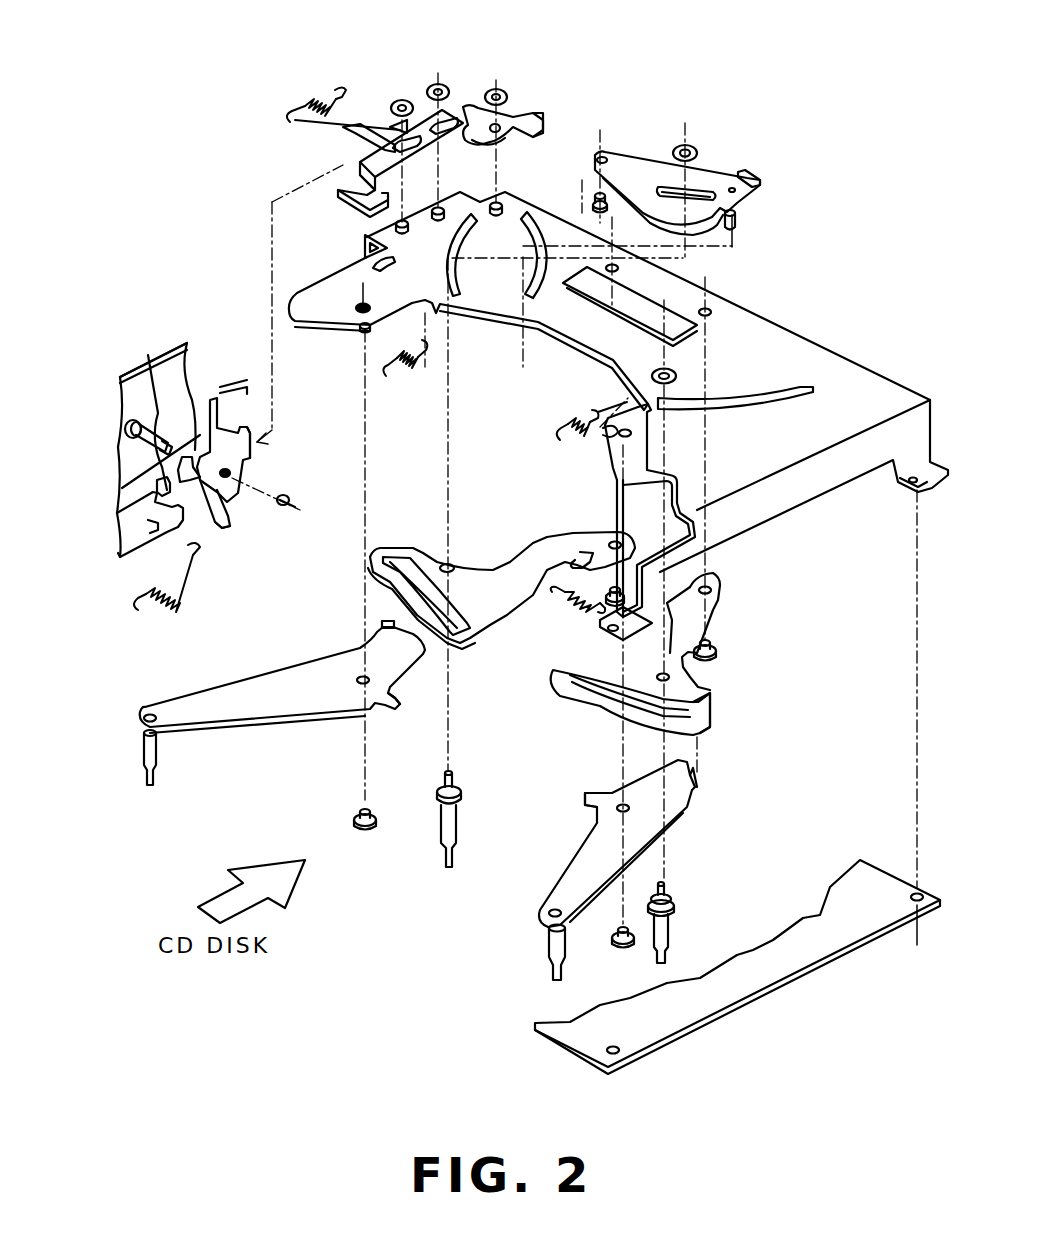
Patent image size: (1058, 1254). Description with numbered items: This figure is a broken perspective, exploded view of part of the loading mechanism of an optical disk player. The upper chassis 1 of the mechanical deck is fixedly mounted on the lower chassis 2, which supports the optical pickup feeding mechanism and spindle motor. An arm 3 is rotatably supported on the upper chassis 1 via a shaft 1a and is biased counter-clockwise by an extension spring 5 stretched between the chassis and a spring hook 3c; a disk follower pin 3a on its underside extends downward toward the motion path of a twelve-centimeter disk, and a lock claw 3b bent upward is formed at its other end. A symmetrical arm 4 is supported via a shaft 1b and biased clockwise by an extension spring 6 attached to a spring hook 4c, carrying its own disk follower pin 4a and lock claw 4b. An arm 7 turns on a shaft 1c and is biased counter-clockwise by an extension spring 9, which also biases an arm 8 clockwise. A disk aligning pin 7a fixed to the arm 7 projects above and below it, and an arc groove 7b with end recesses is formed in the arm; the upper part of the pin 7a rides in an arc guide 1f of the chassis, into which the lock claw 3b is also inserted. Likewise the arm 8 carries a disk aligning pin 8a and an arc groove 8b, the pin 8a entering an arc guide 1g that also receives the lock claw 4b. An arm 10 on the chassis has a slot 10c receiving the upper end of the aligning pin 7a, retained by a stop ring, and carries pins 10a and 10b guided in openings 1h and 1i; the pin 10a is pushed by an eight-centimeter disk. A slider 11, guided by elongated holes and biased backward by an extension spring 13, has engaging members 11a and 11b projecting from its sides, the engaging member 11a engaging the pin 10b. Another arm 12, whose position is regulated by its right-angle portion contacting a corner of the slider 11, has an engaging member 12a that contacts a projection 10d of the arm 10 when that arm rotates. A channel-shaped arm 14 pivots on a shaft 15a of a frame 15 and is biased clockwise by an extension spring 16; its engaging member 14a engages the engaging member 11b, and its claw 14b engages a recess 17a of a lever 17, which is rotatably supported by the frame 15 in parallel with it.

The upper chassis 1 is at (812, 345).
The shaft 1a is at (365, 833).
The shaft 1b is at (620, 952).
The shaft 1c is at (647, 522).
The arc guide 1f is at (462, 240).
The arc guide 1g is at (725, 410).
The guide opening 1h is at (528, 296).
The guide opening 1i is at (363, 258).
The lower chassis 2 is at (870, 872).
The arm 3 is at (275, 688).
The disk follower pin 3a is at (158, 750).
The lock claw 3b is at (380, 622).
The spring hook 3c is at (397, 712).
The arm 4 is at (570, 883).
The disk follower pin 4a is at (547, 945).
The lock claw 4b is at (700, 777).
The spring hook 4c is at (590, 798).
The extension spring 5 is at (405, 372).
The extension spring 6 is at (565, 422).
The arm 7 is at (533, 548).
The disk aligning pin 7a is at (458, 825).
The arc groove 7b is at (420, 552).
The arm 8 is at (722, 597).
The disk aligning pin 8a is at (670, 925).
The arc groove 8b is at (705, 703).
The extension spring 9 is at (575, 615).
The arm 10 is at (712, 172).
The pin 10a is at (737, 222).
The pin 10b is at (592, 196).
The slot 10c is at (668, 188).
The projection 10d is at (755, 172).
The slider 11 is at (412, 118).
The engaging member 11a is at (352, 205).
The engaging member 11b is at (345, 135).
The arm 12 is at (515, 115).
The engaging member 12a is at (548, 115).
The extension spring 13 is at (310, 105).
The channel-shaped arm 14 is at (232, 480).
The engaging member 14a is at (258, 448).
The tab 14b is at (222, 535).
The frame 15 is at (195, 380).
The shaft 15a is at (145, 360).
The extension spring 16 is at (175, 575).
The lever 17 is at (122, 552).
The recess 17a is at (155, 485).